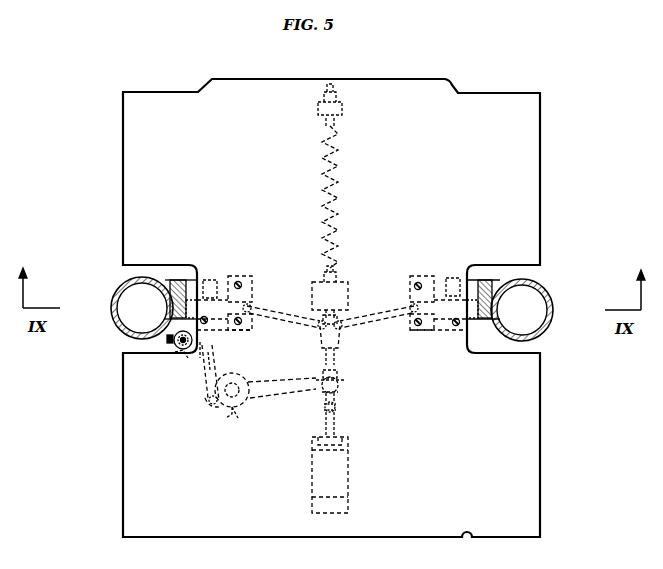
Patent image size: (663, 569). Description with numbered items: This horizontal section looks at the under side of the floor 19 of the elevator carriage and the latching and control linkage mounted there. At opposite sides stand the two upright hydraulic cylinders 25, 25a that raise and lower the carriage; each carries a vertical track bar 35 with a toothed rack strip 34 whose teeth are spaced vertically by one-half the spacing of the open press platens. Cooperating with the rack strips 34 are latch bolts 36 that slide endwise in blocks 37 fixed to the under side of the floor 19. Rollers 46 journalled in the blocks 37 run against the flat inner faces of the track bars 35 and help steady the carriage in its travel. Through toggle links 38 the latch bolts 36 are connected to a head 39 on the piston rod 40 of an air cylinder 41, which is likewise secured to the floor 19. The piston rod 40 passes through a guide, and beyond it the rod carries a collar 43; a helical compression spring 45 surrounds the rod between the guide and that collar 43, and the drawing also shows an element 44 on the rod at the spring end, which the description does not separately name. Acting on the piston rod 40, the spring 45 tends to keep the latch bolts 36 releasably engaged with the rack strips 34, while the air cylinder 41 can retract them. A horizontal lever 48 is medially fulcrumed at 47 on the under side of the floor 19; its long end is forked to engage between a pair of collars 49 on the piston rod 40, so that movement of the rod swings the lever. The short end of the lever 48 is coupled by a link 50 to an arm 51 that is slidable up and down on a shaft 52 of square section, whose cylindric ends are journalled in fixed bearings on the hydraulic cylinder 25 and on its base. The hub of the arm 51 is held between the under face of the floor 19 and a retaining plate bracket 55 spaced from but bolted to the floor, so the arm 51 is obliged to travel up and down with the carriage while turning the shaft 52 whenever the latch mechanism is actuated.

The floor 19 is at (522, 463).
The hydraulic cylinder 25 is at (112, 306).
The hydraulic cylinder 25a is at (553, 308).
The toothed rack strip 34 is at (172, 306).
The vertical track bar 35 is at (180, 285).
The latch bolt 36 is at (238, 280).
The block 37 is at (248, 330).
The toggle link 38 is at (288, 316).
The head 39 is at (320, 338).
The piston rod 40 is at (338, 408).
The air cylinder 41 is at (350, 470).
The collar 43 is at (343, 110).
The spring plunger 44 is at (348, 290).
The helical compression spring 45 is at (341, 158).
The roller 46 is at (210, 280).
The fulcrum 47 is at (232, 410).
The horizontal lever 48 is at (272, 396).
The collar 49 is at (340, 386).
The link 50 is at (214, 352).
The arm 51 is at (205, 360).
The shaft 52 is at (195, 346).
The retaining plate bracket 55 is at (180, 355).